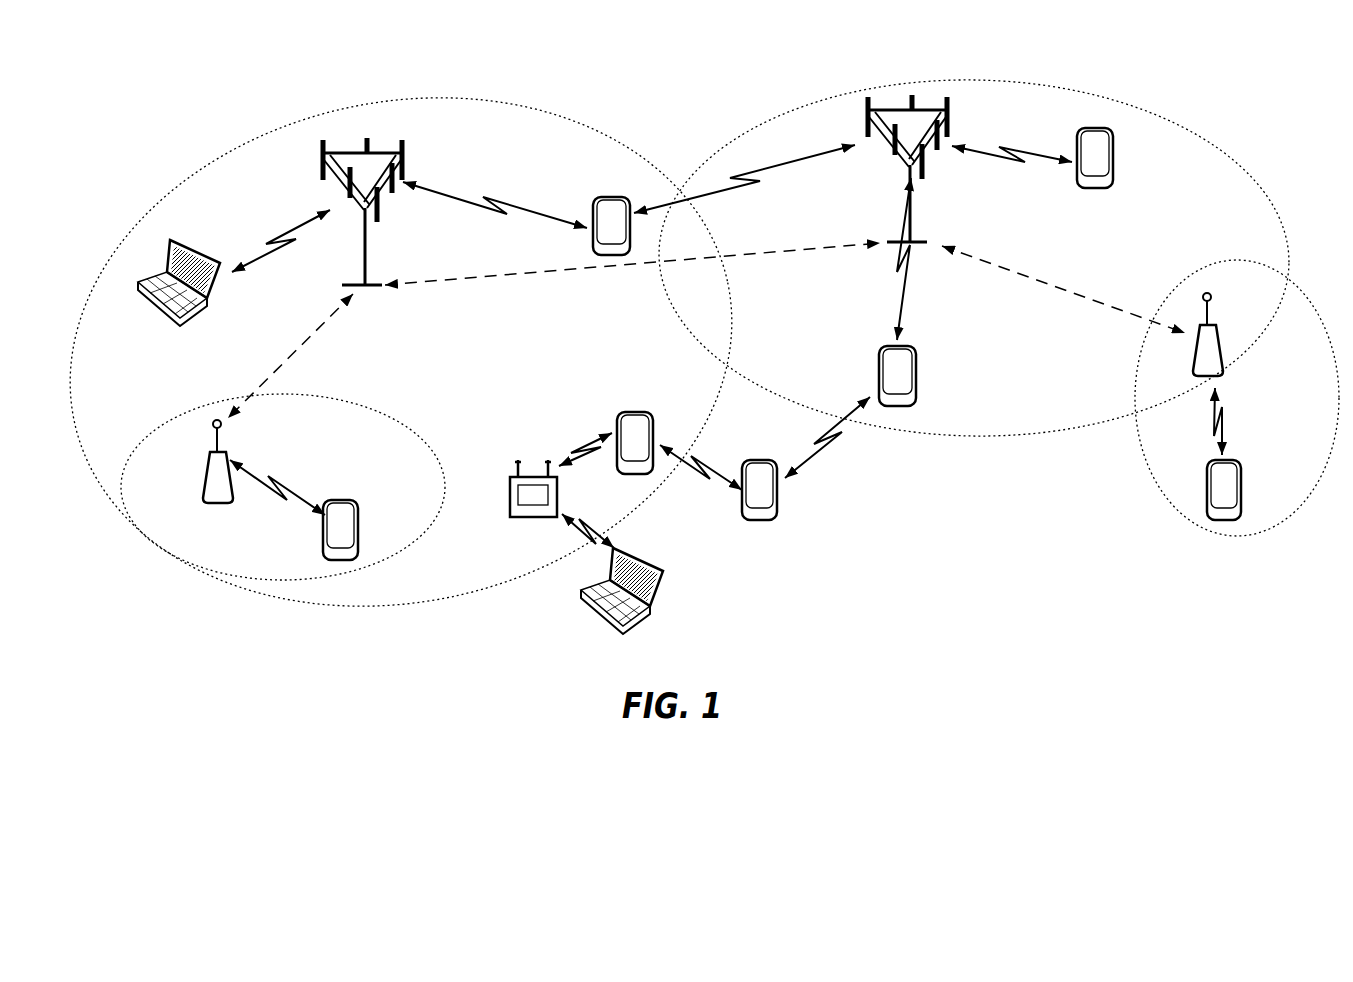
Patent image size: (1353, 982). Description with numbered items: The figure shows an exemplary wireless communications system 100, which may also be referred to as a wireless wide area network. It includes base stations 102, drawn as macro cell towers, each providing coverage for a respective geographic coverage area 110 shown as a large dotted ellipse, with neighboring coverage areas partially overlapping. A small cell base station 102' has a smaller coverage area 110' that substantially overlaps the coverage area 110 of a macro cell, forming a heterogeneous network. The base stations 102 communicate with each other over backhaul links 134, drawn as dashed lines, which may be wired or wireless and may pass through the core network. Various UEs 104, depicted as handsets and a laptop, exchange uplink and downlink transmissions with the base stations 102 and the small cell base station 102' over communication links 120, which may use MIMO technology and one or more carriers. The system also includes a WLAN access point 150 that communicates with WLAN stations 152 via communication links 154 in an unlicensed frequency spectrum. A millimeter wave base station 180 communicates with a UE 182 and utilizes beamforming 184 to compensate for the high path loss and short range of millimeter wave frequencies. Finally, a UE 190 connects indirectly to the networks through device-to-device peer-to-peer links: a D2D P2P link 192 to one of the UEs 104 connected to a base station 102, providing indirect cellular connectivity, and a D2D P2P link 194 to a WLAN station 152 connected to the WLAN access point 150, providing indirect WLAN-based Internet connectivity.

The wireless communications system 100 is at (118, 143).
The base station 102 is at (649, 221).
The small cell base station 102' is at (241, 478).
The UE 104 is at (190, 246).
The geographic coverage area 110 is at (660, 352).
The coverage area 110' is at (283, 516).
The communication link 120 is at (262, 255).
The backhaul link 134 is at (302, 355).
The WLAN access point 150 is at (540, 519).
The WLAN station 152 is at (640, 412).
The communication link 154 is at (567, 463).
The millimeter wave base station 180 is at (1213, 322).
The UE 182 is at (1240, 508).
The beamforming 184 is at (1222, 418).
The UE 190 is at (766, 522).
The D2D P2P link 192 is at (812, 432).
The D2D P2P link 194 is at (718, 466).